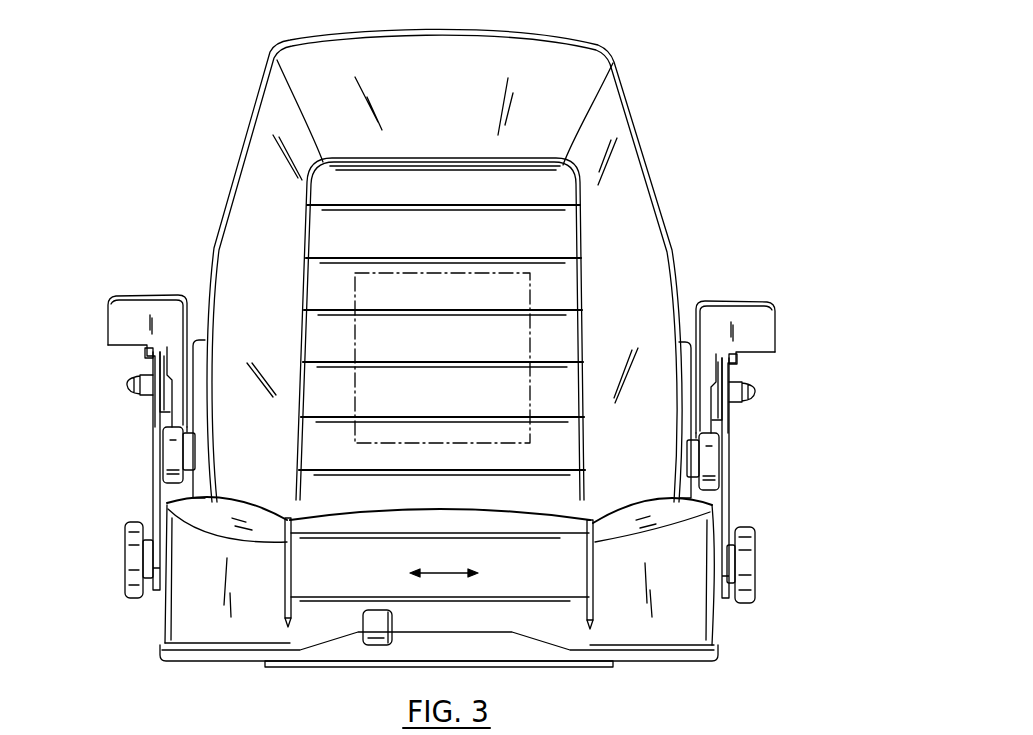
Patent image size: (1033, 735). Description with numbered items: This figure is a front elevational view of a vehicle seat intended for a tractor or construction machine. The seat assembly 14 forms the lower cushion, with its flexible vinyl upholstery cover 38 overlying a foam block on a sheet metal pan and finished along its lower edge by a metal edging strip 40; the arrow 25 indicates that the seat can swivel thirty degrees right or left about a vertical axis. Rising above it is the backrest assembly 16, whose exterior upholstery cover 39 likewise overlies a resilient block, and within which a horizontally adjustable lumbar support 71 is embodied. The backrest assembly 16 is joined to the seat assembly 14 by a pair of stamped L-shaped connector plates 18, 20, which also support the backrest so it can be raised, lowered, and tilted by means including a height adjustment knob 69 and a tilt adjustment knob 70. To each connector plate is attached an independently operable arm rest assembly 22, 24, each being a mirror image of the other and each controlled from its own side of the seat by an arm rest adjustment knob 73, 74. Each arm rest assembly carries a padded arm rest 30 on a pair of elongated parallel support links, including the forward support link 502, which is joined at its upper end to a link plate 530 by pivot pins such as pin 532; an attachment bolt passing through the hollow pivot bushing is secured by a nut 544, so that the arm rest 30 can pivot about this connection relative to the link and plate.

The backrest assembly 16 is at (643, 122).
The exterior upholstery cover 39 is at (515, 165).
The lumbar support 71 is at (531, 291).
The left connector plate 18 is at (683, 346).
The right connector plate 20 is at (202, 340).
The arm rest 30 is at (143, 297).
The pivot pin 532 is at (145, 352).
The nut 544 is at (128, 383).
The link plate 530 is at (164, 400).
The right arm rest assembly 24 is at (138, 416).
The left arm rest assembly 22 is at (738, 434).
The forward arm support link 502 is at (152, 440).
The height adjustment knob 69 is at (165, 455).
The tilt adjustment knob 70 is at (712, 463).
The seat assembly 14 is at (231, 485).
The arm rest adjustment knob 74 is at (126, 553).
The arm rest adjustment knob 73 is at (756, 570).
The exterior upholstery cover 38 is at (396, 512).
The arrow 25 is at (455, 572).
The metal edging strip 40 is at (719, 655).